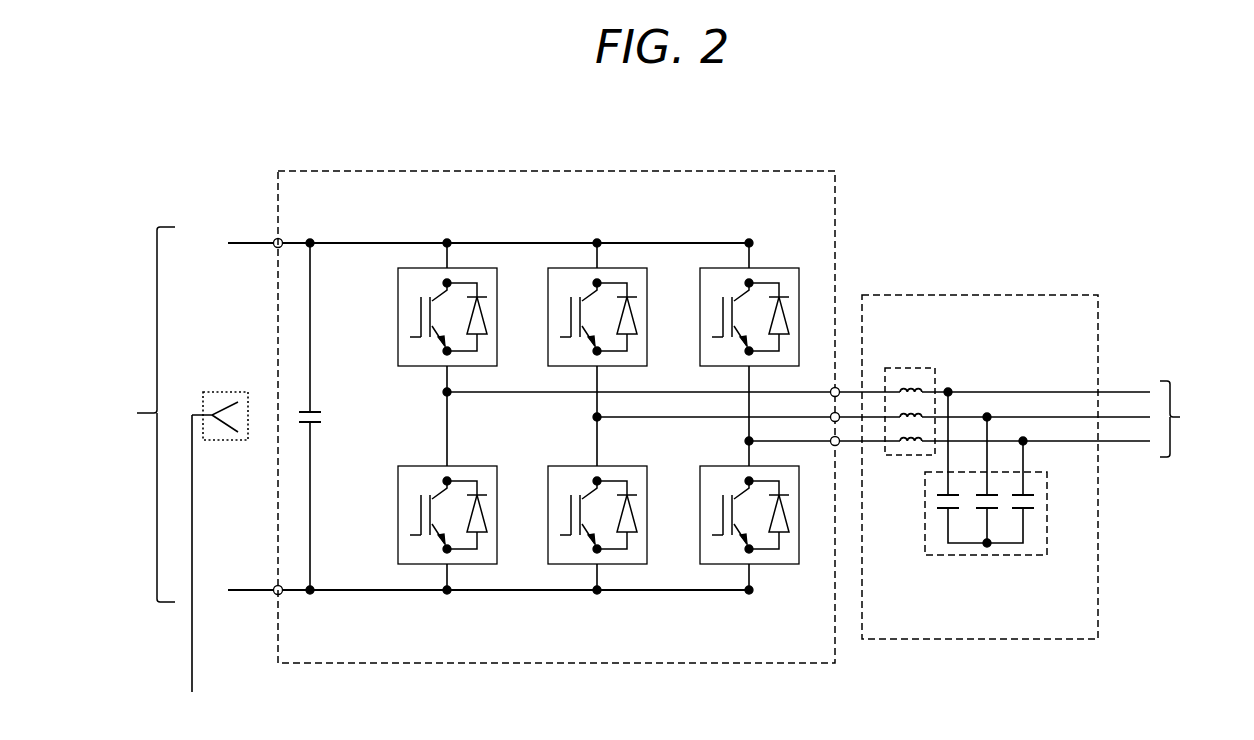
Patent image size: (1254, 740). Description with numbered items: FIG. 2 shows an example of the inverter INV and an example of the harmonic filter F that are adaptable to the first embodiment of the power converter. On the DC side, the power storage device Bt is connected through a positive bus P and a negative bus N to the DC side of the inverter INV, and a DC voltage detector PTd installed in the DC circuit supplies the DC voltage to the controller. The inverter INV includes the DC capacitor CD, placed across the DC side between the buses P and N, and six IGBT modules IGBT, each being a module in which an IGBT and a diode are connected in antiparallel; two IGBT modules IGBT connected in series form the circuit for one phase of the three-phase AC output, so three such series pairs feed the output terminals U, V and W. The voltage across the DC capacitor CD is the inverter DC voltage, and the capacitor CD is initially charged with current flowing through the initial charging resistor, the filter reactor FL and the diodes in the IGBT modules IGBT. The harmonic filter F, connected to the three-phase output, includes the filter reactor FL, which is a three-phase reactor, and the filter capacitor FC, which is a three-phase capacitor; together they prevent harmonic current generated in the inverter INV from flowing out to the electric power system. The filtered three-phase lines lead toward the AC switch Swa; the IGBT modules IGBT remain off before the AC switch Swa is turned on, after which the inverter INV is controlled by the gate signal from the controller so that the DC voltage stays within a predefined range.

The inverter INV is at (532, 171).
The DC capacitor CD is at (317, 410).
The IGBT module IGBT is at (483, 267).
The positive DC bus terminal P is at (296, 229).
The negative DC bus terminal N is at (297, 614).
The DC voltage detector PTd is at (225, 392).
The power storage device Bt is at (140, 414).
The U-phase output terminal U is at (798, 385).
The V-phase output terminal V is at (873, 410).
The W-phase output terminal W is at (949, 434).
The harmonic filter F is at (948, 295).
The filter reactor FL is at (936, 377).
The filter capacitor FC is at (983, 557).
The AC switch Swa is at (1193, 419).